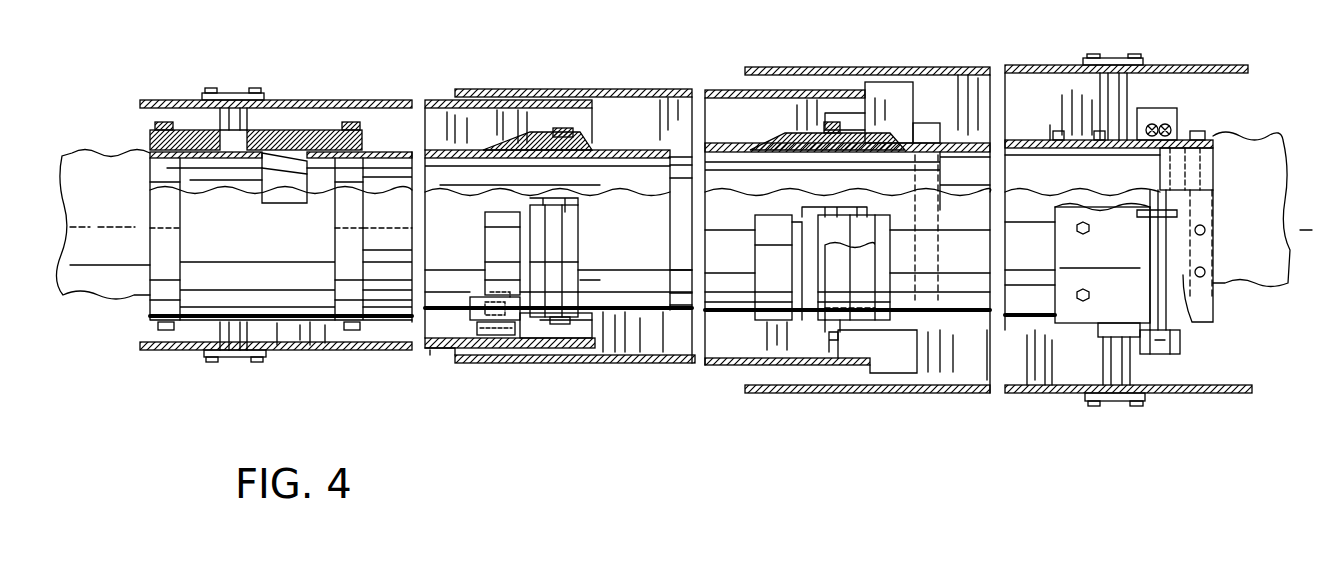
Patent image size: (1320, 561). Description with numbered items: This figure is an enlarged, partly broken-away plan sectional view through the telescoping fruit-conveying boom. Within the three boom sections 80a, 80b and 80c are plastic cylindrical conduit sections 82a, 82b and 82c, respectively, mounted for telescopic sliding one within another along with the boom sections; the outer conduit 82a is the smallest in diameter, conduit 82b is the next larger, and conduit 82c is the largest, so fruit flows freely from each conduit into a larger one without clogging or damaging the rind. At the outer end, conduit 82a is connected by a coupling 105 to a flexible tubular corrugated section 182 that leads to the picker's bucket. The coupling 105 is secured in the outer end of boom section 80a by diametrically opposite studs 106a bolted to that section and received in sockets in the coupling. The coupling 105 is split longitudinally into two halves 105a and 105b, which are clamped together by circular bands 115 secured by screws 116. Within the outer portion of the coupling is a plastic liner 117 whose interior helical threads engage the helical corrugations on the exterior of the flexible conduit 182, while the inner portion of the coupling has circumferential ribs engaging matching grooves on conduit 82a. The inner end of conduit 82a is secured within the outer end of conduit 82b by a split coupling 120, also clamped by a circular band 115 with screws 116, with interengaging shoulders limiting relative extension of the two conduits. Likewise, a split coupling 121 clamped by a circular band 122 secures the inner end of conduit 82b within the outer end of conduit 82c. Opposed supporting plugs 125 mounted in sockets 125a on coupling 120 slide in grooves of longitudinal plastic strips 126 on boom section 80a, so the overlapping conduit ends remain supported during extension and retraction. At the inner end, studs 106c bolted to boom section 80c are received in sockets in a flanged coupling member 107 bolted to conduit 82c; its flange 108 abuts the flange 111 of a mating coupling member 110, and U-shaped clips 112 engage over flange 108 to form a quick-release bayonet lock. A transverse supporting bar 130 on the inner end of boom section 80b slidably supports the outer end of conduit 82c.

The boom section 80a is at (302, 100).
The boom section 80b is at (603, 89).
The boom section 80c is at (843, 67).
The conduit section 82a is at (391, 306).
The conduit section 82b is at (655, 357).
The conduit section 82c is at (956, 385).
The coupling 105 is at (279, 323).
The coupling half 105a is at (192, 210).
The coupling half 105b is at (257, 239).
The studs 106a is at (233, 108).
The studs 106c is at (1112, 80).
The flanged coupling member 107 is at (1102, 264).
The flange 108 is at (1129, 120).
The mating coupling member 110 is at (1198, 131).
The flange 111 is at (1168, 126).
The U-shaped clips 112 is at (1172, 345).
The circular bands 115 is at (158, 258).
The screws 116 is at (351, 123).
The plastic liner 117 is at (150, 143).
The split coupling 120 is at (492, 266).
The split coupling 121 is at (757, 325).
The circular band 122 is at (843, 340).
The supporting plugs 125 is at (491, 335).
The sockets 125a is at (470, 340).
The longitudinal plastic strips 126 is at (530, 345).
The transverse supporting bar 130 is at (925, 123).
The flexible tubular corrugated section 182 is at (122, 292).